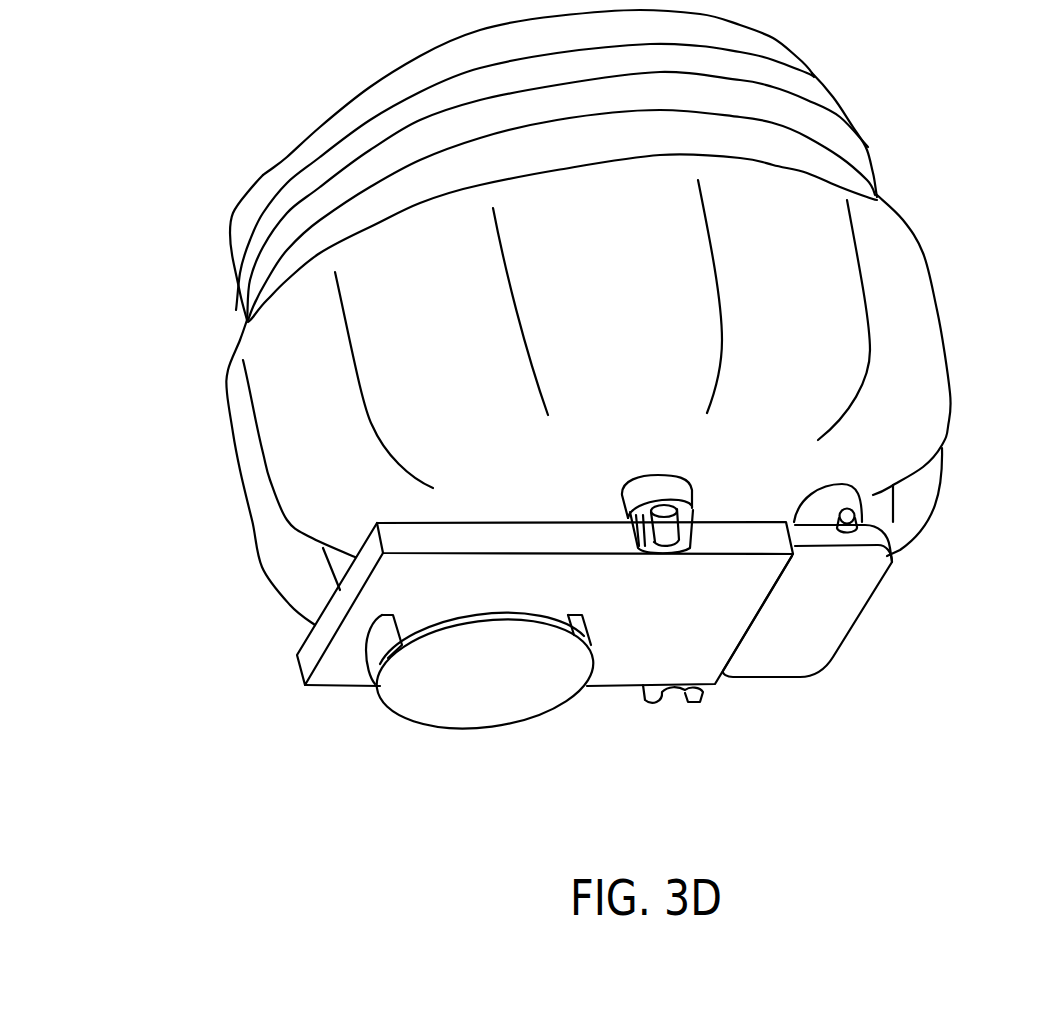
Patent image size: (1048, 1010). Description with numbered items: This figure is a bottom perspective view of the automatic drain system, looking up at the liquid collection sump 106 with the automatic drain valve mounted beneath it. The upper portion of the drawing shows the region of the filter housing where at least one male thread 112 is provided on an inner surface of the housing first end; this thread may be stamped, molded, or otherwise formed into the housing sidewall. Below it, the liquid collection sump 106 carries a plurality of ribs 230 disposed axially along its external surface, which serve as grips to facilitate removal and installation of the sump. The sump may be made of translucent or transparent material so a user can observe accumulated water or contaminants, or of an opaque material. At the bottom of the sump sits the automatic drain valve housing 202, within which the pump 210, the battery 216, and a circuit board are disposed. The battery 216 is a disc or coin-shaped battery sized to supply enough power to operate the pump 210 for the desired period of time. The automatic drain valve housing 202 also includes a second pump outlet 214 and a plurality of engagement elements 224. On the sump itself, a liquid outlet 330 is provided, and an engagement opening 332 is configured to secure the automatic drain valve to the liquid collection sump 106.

The liquid collection sump 106 is at (206, 466).
The male thread 112 is at (250, 233).
The plurality of ribs 230 is at (917, 312).
The automatic drain valve housing 202 is at (303, 638).
The battery 216 is at (473, 713).
The pump 210 is at (869, 594).
The liquid outlet 330 is at (873, 495).
The second pump outlet 214 is at (878, 518).
The engagement opening 332 is at (662, 505).
The plurality of engagement elements 224 is at (650, 703).